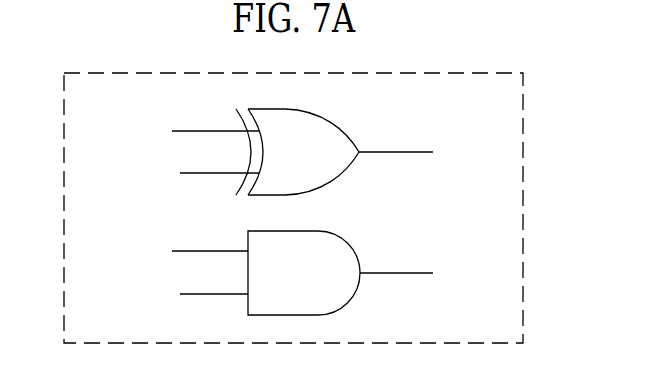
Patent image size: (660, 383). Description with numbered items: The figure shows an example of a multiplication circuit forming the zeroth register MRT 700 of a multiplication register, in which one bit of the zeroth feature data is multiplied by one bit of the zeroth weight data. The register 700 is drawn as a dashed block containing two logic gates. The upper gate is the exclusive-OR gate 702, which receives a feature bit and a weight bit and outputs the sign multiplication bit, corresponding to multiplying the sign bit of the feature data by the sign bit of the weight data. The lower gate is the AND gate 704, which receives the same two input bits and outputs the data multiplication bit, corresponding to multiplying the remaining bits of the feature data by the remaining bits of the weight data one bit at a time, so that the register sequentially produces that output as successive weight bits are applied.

The 0th register MRT0 700 is at (523, 95).
The exclusive-OR gate 702 is at (310, 166).
The AND gate 704 is at (318, 284).